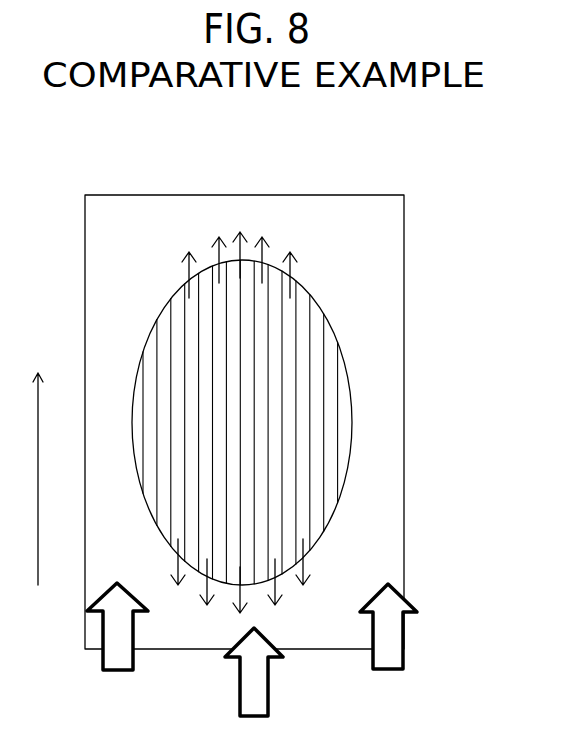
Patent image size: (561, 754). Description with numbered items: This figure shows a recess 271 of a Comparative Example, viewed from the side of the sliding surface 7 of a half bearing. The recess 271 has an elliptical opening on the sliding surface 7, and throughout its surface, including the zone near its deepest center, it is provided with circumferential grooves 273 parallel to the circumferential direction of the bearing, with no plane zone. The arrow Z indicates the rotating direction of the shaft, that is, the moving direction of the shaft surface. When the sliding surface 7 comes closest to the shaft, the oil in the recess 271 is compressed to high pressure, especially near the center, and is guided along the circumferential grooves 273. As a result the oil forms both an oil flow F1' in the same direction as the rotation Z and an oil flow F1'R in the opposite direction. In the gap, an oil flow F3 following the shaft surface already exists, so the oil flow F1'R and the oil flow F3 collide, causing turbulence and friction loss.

The sliding surface 7 is at (187, 225).
The recess 271 is at (303, 428).
The circumferential grooves 273 is at (323, 482).
The oil flow F1' is at (325, 277).
The oil flow F1'R is at (331, 563).
The oil flow F3 is at (387, 637).
The arrow indicating rotating direction of the shaft Z is at (27, 479).